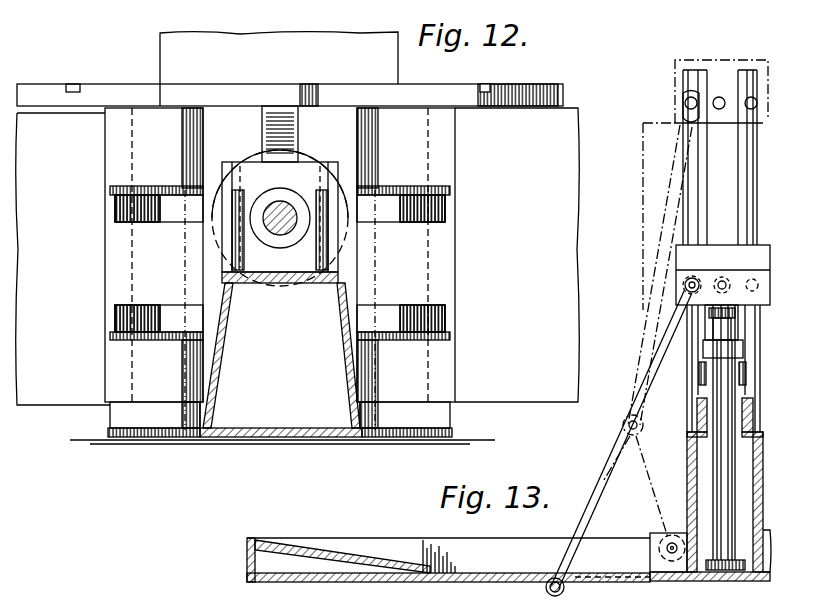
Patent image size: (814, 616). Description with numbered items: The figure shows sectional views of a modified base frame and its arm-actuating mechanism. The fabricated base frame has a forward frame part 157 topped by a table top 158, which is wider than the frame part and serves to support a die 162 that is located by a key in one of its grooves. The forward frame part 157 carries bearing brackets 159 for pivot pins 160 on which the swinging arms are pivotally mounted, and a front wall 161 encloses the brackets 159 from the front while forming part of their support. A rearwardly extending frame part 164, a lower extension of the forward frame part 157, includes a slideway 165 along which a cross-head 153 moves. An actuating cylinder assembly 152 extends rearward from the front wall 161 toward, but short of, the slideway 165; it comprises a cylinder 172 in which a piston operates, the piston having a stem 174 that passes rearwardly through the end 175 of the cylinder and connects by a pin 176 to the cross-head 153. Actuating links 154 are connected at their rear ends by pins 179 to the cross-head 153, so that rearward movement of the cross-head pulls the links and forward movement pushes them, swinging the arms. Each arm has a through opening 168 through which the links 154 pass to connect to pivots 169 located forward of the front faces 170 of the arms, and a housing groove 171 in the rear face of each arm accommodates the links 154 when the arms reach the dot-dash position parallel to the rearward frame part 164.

In FIG. 13, the actuating cylinder assembly 152 is at (749, 469).
In FIG. 13, the cross-head 153 is at (712, 48).
In FIG. 13, the actuating links 154 is at (652, 306).
In FIG. 12, the forward frame part 157 is at (334, 298).
In FIG. 13, the forward frame part 157 is at (761, 492).
In FIG. 12, the table top 158 is at (106, 88).
In FIG. 12, the bearing brackets 159 is at (142, 218).
In FIG. 13, the bearing brackets 159 is at (660, 536).
In FIG. 12, the pivot pins 160 is at (140, 152).
In FIG. 13, the pivot pins 160 is at (674, 534).
In FIG. 12, the front wall 161 is at (108, 416).
In FIG. 13, the front wall 161 is at (668, 582).
In FIG. 12, the die 162 is at (278, 24).
In FIG. 13, the rearwardly extending frame part 164 is at (757, 139).
In FIG. 13, the slideway 165 is at (744, 174).
In FIG. 13, the through opening 168 is at (482, 572).
In FIG. 13, the pivots 169 is at (556, 596).
In FIG. 13, the front faces 170 is at (396, 580).
In FIG. 13, the housing groove 171 is at (356, 548).
In FIG. 13, the cylinder 172 is at (720, 478).
In FIG. 12, the stem 174 is at (292, 190).
In FIG. 13, the stem 174 is at (724, 322).
In FIG. 12, the end of the cylinder 175 is at (304, 164).
In FIG. 13, the end of the cylinder 175 is at (710, 346).
In FIG. 13, the pin 176 is at (735, 268).
In FIG. 13, the pins 179 is at (684, 286).